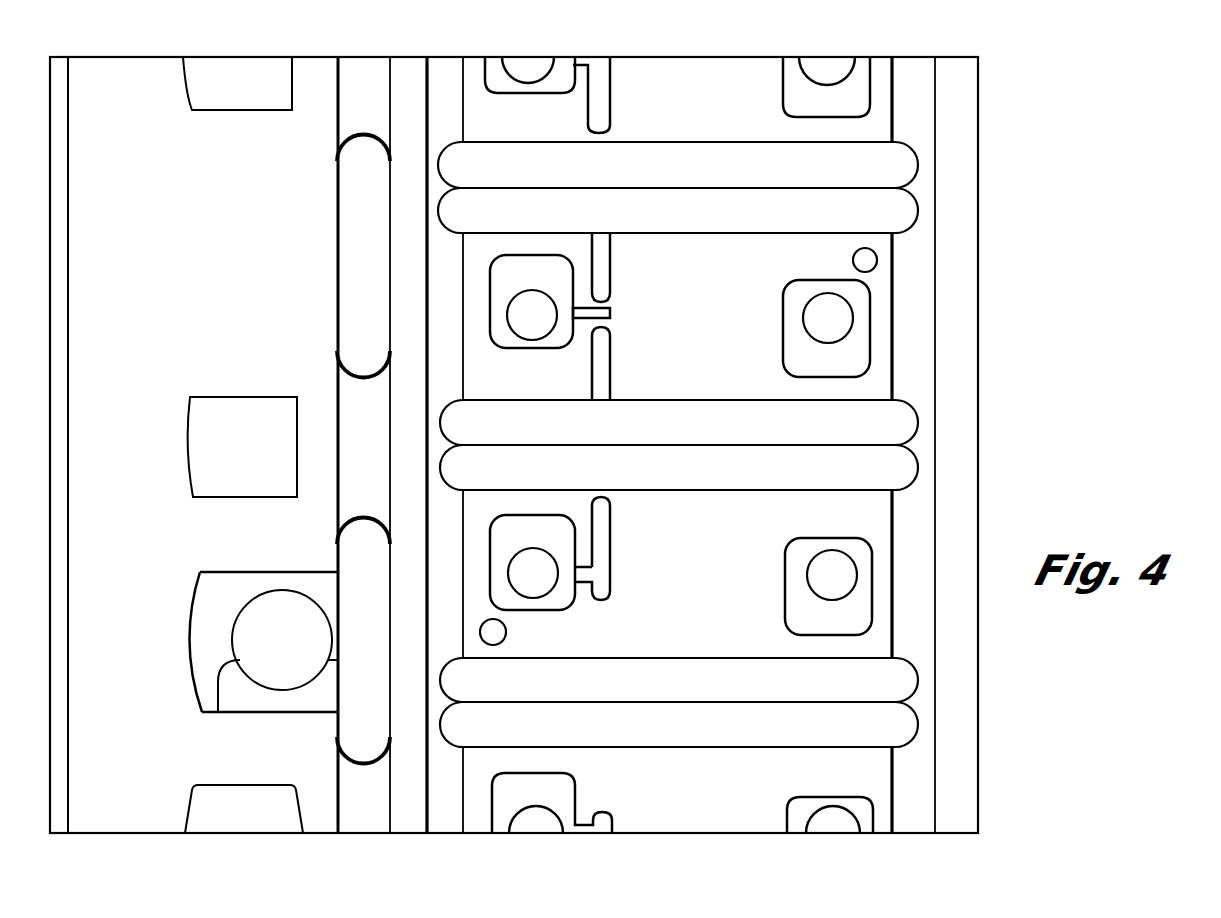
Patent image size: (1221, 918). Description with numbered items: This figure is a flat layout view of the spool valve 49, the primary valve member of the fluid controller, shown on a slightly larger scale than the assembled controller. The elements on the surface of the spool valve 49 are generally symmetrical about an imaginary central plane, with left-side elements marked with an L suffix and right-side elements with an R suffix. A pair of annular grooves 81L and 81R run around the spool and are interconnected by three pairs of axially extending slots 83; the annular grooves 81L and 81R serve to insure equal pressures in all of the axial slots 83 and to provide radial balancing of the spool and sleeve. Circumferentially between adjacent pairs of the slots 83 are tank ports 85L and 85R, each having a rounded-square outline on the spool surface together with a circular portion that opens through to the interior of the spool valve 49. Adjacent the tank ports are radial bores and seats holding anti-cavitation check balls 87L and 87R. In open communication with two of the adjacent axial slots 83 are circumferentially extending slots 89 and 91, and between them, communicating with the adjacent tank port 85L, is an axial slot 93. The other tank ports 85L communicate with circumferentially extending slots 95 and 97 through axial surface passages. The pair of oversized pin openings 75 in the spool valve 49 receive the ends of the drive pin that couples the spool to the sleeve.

The spool valve 49 is at (667, 49).
The annular groove 81L is at (443, 72).
The annular groove 81R is at (912, 75).
The oversized pin openings 75 is at (340, 230).
The axially extending slots 83 is at (697, 155).
The circumferentially extending slot 95 is at (598, 112).
The circumferentially extending slot 89 is at (604, 260).
The axial slot 93 is at (612, 316).
The circumferentially extending slot 91 is at (604, 355).
The tank port 85L is at (518, 322).
The tank port 85R is at (845, 568).
The anti-cavitation check ball 87L is at (507, 632).
The anti-cavitation check ball 87R is at (852, 257).
The circumferentially extending slot 97 is at (604, 553).